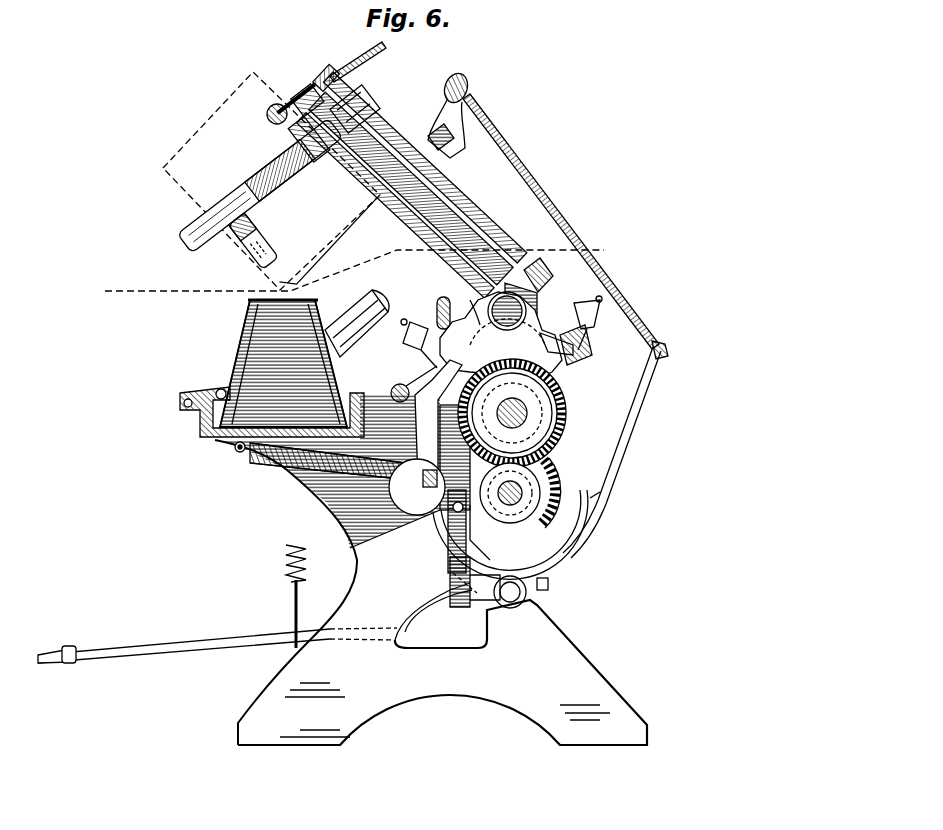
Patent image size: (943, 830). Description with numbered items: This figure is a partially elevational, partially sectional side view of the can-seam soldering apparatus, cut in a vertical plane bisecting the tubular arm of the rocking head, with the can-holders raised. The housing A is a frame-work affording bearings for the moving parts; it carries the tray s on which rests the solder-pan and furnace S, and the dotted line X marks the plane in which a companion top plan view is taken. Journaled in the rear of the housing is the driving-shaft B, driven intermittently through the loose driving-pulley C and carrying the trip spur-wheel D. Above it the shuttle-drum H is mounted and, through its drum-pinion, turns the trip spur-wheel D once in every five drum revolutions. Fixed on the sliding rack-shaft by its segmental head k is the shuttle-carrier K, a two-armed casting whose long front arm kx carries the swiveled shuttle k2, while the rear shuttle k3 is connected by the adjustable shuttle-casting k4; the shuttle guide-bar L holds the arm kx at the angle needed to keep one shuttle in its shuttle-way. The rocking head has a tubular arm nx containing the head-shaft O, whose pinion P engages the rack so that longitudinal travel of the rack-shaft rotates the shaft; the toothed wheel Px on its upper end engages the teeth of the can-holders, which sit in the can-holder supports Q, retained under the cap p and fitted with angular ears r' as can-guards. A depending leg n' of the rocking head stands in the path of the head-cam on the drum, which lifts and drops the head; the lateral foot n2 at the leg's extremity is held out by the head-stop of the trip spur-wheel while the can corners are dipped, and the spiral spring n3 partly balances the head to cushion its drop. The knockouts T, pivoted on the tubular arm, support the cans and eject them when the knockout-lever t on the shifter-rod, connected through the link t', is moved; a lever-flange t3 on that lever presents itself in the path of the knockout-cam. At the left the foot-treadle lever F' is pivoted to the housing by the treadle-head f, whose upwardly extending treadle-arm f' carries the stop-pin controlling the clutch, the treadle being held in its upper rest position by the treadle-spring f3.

The housing A is at (431, 592).
The driving-shaft B is at (590, 502).
The driving-pulley C is at (572, 551).
The trip spur-wheel D is at (557, 468).
The shuttle-drum H is at (562, 414).
The shuttle-carrier K is at (501, 335).
The shuttle guide-bar L is at (396, 389).
The head-shaft O is at (404, 136).
The pinion P is at (530, 280).
The toothed wheel Px is at (371, 60).
The can-holder supports Q is at (255, 190).
The solder-pan and furnace S is at (304, 358).
The knockouts T is at (357, 232).
The dotted line x x X is at (352, 186).
The lever F' is at (217, 640).
The treadle-head f is at (500, 590).
The treadle-arm f' is at (433, 598).
The treadle-spring f3 is at (284, 595).
The segmental head k is at (478, 296).
The arm kx is at (452, 336).
The shuttle k2 is at (420, 398).
The rear shuttle k3 is at (562, 373).
The shuttle-casting k4 is at (589, 336).
The leg n' is at (438, 421).
The lateral foot n2 is at (430, 493).
The spiral spring n3 is at (287, 463).
The tubular arm nx is at (490, 210).
The cap p is at (311, 112).
The angular ears r' is at (253, 241).
The tray s is at (210, 437).
The knockout-lever t is at (615, 449).
The link t' is at (561, 221).
The lever-flange t3 is at (460, 158).